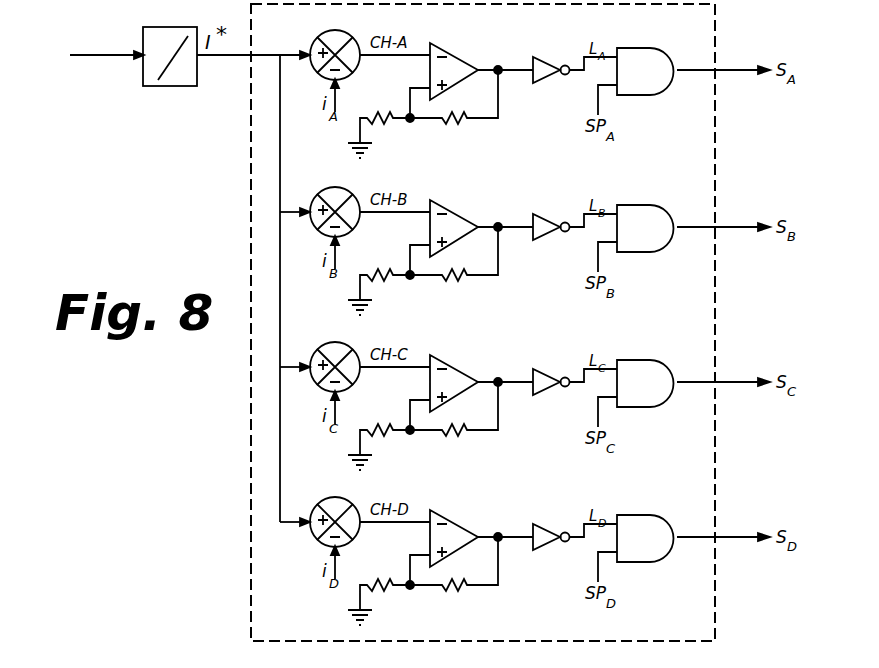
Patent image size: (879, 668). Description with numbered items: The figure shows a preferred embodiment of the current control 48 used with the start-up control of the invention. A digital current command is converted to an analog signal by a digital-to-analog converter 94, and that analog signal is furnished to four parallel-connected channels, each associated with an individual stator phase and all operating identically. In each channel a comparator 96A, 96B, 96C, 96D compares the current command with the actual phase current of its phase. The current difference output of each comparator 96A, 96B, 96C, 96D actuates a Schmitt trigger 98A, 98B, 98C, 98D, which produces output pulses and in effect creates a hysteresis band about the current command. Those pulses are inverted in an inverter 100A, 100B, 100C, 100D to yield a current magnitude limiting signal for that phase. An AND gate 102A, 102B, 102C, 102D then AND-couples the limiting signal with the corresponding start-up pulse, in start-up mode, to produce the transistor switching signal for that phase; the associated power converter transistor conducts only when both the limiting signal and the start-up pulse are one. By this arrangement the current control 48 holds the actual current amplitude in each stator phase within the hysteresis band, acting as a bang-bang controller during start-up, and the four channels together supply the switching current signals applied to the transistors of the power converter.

The digital-to-analog converter 94 is at (143, 30).
The current control 48 is at (251, 457).
The comparator 96A is at (328, 33).
The comparator 96B is at (326, 201).
The comparator 96C is at (326, 356).
The comparator 96D is at (326, 511).
The Schmitt trigger 98A is at (462, 60).
The Schmitt trigger 98B is at (465, 220).
The Schmitt trigger 98C is at (465, 375).
The Schmitt trigger 98D is at (466, 530).
The inverter 100A is at (547, 62).
The inverter 100B is at (555, 211).
The inverter 100C is at (555, 366).
The inverter 100D is at (556, 521).
The AND gate 102A is at (652, 48).
The AND gate 102B is at (655, 212).
The AND gate 102C is at (655, 367).
The AND gate 102D is at (656, 522).